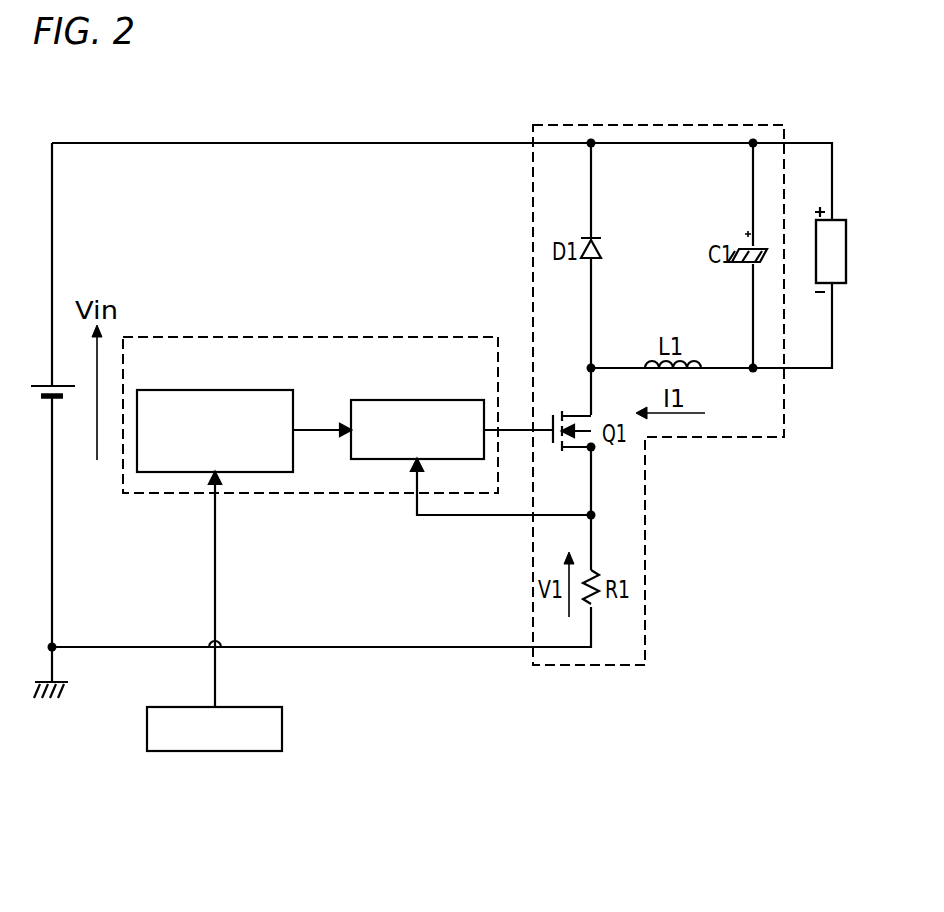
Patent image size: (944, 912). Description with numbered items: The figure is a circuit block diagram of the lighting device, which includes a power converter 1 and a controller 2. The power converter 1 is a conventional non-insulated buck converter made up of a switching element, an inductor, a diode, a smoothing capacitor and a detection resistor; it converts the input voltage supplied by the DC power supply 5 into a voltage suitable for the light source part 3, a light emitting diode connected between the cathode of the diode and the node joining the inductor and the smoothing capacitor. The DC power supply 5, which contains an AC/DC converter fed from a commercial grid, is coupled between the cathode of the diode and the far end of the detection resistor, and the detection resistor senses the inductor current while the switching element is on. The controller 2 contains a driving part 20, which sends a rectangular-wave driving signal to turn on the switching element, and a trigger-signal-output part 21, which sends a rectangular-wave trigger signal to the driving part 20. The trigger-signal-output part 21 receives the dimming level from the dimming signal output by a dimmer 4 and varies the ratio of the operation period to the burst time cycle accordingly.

The power converter 1 is at (664, 120).
The controller 2 is at (318, 333).
The light source part 3 is at (847, 237).
The dimmer 4 is at (262, 742).
The DC power supply 5 is at (40, 375).
The driving part 20 is at (465, 410).
The trigger-signal-output part 21 is at (167, 395).